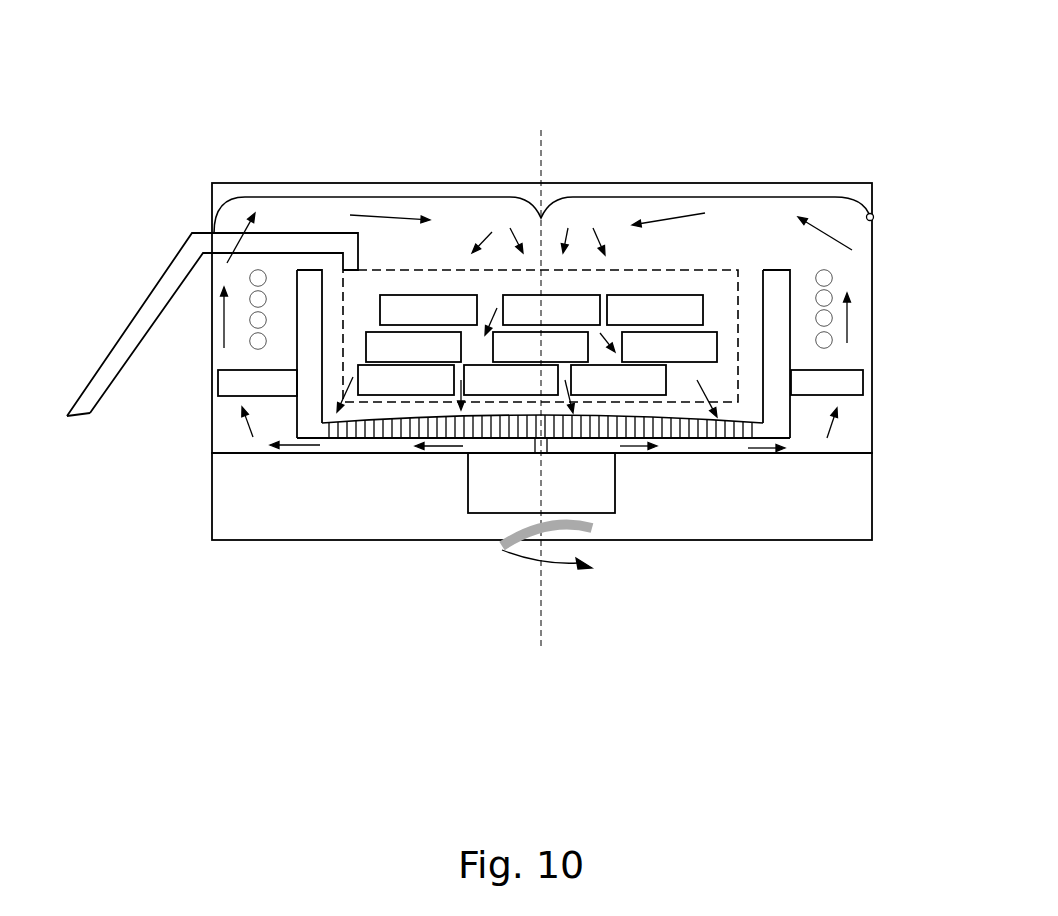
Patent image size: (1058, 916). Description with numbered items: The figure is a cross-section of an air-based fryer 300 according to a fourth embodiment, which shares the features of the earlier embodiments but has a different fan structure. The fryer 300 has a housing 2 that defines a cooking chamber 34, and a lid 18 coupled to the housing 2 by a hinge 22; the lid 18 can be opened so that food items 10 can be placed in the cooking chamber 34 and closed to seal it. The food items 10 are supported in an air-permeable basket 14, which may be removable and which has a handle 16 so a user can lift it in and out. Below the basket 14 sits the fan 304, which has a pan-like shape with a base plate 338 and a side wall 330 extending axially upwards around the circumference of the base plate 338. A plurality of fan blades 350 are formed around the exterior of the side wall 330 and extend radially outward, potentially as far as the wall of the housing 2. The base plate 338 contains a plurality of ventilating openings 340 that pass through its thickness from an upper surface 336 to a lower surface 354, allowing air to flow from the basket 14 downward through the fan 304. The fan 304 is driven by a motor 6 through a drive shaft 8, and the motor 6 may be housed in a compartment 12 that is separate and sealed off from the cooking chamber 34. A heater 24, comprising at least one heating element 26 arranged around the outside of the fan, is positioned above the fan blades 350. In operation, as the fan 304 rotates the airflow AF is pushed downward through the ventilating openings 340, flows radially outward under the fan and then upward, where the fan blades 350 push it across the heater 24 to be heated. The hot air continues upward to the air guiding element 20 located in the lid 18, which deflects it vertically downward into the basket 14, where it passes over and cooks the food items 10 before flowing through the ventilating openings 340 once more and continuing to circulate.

The air-based fryer 300 is at (284, 99).
The housing 2 is at (872, 305).
The compartment 12 is at (237, 515).
The lid 18 is at (232, 182).
The air guiding element 20 is at (540, 216).
The hinge 22 is at (874, 216).
The cooking chamber 34 is at (745, 230).
The handle 16 is at (135, 318).
The airflow AF is at (223, 320).
The basket 14 is at (585, 270).
The food items 10 is at (697, 293).
The heating element 26 is at (255, 315).
The heater 24 is at (252, 347).
The fan blades 350 is at (863, 384).
The side wall 330 is at (777, 392).
The fan 304 is at (358, 432).
The upper surface 336 is at (400, 423).
The ventilating openings 340 is at (562, 437).
The lower surface 354 is at (693, 432).
The base plate 338 is at (723, 430).
The motor 6 is at (467, 496).
The drive shaft 8 is at (542, 447).